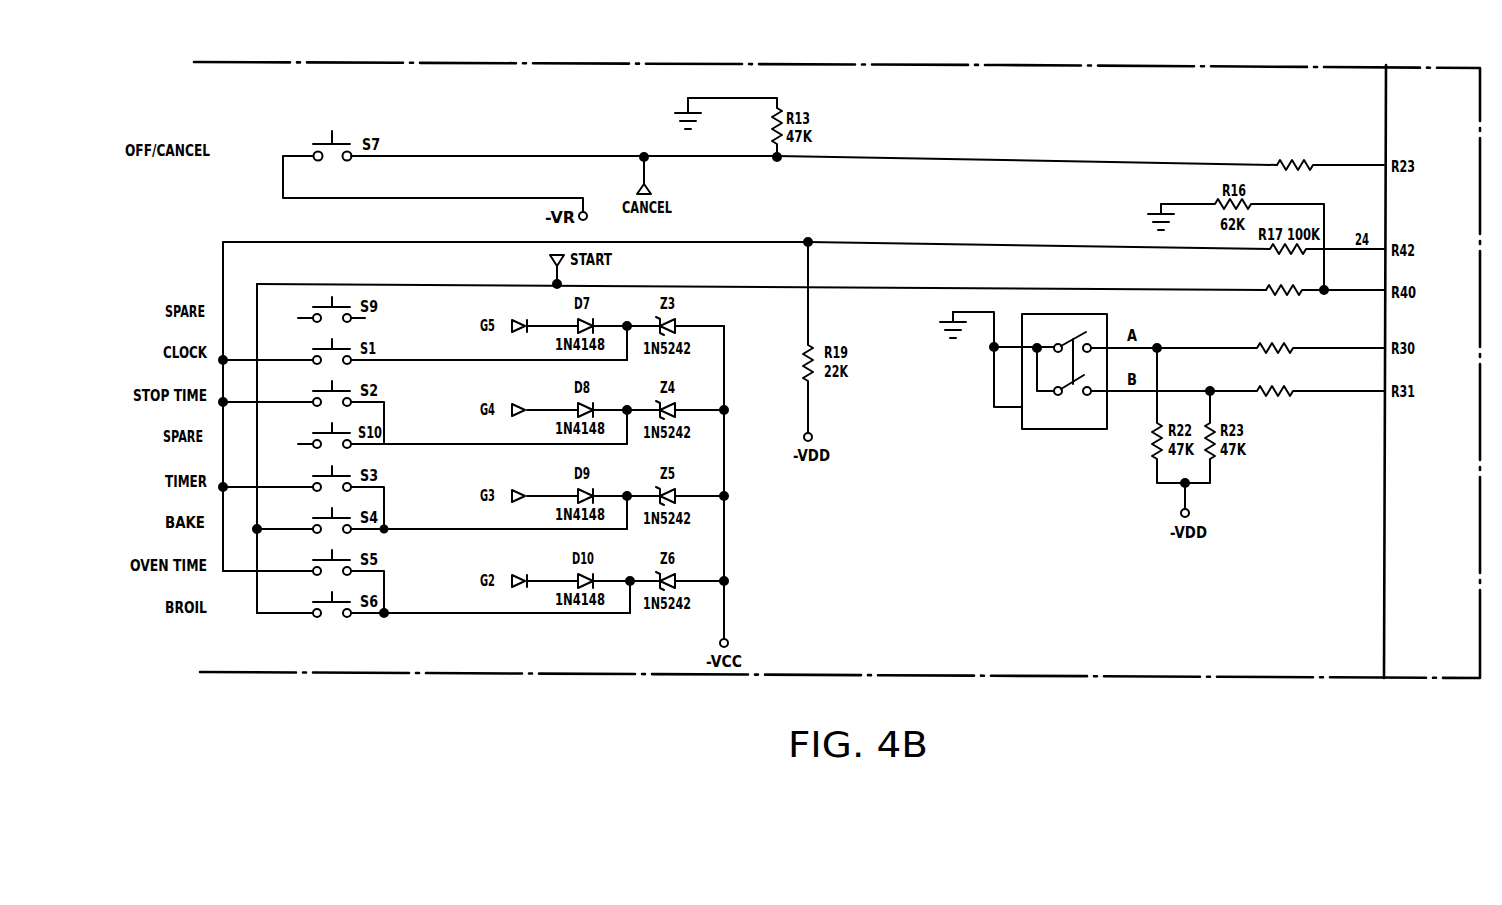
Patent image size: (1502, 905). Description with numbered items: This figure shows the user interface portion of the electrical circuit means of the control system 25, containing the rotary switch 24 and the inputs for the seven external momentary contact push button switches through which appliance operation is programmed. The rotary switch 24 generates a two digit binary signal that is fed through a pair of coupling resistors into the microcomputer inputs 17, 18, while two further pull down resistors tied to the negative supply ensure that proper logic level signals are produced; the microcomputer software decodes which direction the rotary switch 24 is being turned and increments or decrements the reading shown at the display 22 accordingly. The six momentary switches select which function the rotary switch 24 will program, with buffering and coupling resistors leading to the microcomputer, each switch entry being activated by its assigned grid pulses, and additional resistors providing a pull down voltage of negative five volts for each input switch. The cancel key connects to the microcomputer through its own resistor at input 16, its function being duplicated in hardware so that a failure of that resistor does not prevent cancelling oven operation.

The rotary switch 24 is at (1072, 462).
The system 25 is at (1013, 52).
The resistor R14 input pin 16 is at (1330, 168).
The microcomputer input U2- 17 is at (1237, 339).
The microcomputer input U2- 18 is at (1237, 382).
The visual display means 22 is at (1321, 282).